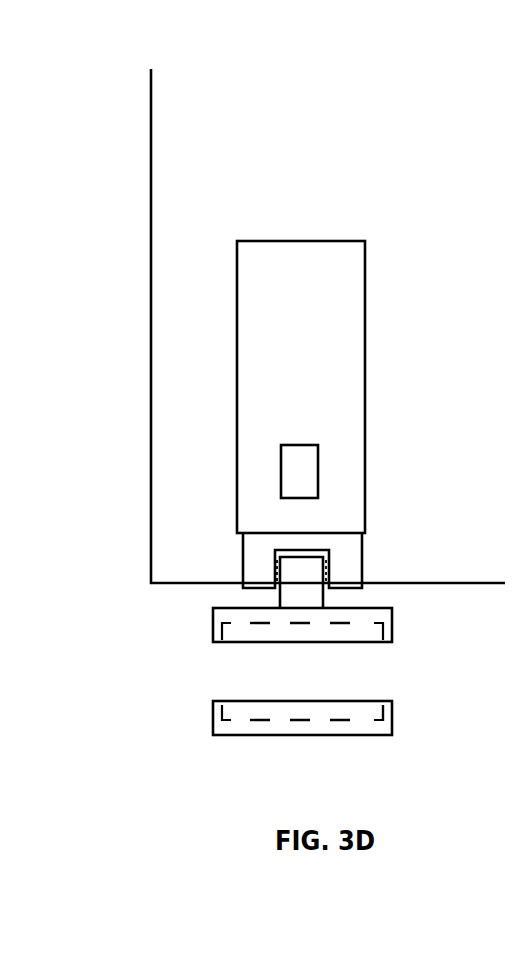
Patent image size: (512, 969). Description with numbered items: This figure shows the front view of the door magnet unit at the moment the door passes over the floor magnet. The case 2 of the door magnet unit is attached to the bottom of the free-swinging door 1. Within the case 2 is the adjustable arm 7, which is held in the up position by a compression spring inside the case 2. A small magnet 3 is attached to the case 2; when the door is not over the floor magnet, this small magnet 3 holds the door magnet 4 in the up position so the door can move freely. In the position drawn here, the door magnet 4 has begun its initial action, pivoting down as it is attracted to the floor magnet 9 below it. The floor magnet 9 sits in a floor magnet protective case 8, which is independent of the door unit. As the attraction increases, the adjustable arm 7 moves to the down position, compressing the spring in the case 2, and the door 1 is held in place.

The door 1 is at (198, 153).
The case 2 is at (350, 295).
The small magnet 3 is at (320, 463).
The adjustable arm 7 is at (350, 555).
The door magnet 4 is at (362, 632).
The floor magnet protective case 8 is at (262, 728).
The floor magnet 9 is at (362, 715).